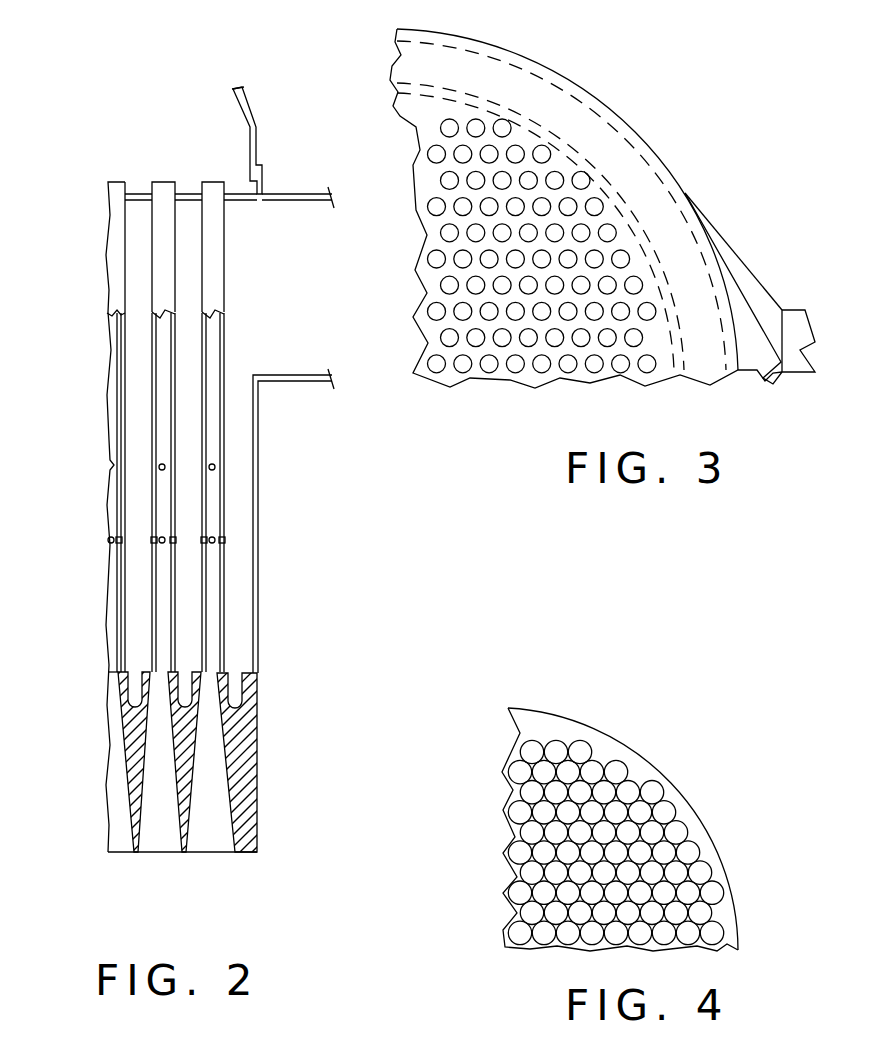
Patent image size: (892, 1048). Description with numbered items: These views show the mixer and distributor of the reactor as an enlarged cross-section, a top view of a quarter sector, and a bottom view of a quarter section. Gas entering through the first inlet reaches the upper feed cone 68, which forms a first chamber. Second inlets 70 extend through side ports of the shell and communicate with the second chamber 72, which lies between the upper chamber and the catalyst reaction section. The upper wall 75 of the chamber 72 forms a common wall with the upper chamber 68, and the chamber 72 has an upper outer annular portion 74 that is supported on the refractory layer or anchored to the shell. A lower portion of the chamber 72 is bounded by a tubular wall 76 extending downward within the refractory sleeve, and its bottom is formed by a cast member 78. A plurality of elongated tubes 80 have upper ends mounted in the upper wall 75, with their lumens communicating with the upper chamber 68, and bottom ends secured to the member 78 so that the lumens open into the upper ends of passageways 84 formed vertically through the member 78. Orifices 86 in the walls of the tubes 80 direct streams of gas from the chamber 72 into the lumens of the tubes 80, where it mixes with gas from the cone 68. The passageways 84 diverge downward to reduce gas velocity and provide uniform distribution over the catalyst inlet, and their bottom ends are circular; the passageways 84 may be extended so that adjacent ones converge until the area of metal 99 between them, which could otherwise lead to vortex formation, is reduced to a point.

In FIG. 2, the upper feed cone 68 is at (246, 103).
In FIG. 3, the second inlets 70 is at (787, 323).
In FIG. 2, the second chamber 72 is at (187, 332).
In FIG. 3, the second chamber 72 is at (605, 102).
In FIG. 2, the upper outer annular portion 74 is at (293, 228).
In FIG. 3, the upper outer annular portion 74 is at (636, 162).
In FIG. 2, the upper wall 75 is at (138, 193).
In FIG. 2, the tubular wall 76 is at (258, 597).
In FIG. 2, the cast member 78 is at (248, 753).
In FIG. 4, the cast member 78 is at (667, 776).
In FIG. 2, the elongated tubes 80 is at (173, 232).
In FIG. 3, the elongated tubes 80 is at (503, 128).
In FIG. 2, the passageways 84 is at (205, 802).
In FIG. 4, the passageways 84 is at (690, 852).
In FIG. 2, the orifices 86 is at (165, 465).
In FIG. 4, the area of metal 99 is at (540, 915).